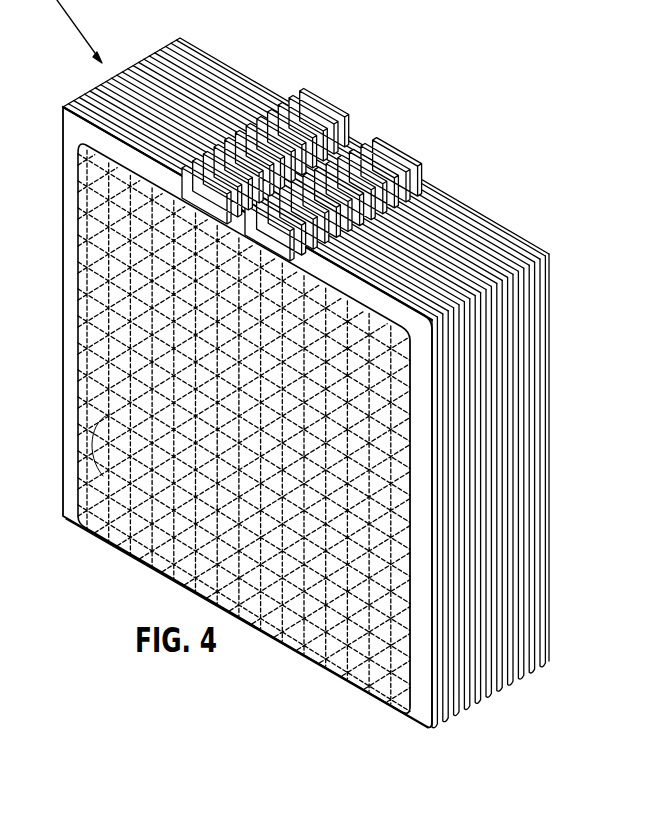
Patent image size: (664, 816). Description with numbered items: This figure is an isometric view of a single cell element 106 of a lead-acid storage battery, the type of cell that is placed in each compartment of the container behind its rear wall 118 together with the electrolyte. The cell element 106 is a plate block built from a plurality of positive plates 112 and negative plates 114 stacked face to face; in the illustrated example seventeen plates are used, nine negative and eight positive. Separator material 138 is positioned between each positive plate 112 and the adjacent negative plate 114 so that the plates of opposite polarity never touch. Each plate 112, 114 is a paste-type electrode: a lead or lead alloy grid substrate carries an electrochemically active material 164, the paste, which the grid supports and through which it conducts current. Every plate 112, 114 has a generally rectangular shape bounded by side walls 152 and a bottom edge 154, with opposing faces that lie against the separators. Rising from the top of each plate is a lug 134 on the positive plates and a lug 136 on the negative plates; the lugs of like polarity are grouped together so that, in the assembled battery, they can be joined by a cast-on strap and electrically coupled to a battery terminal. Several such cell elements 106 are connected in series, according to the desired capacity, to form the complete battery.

The cell element 106 is at (529, 152).
The positive plate 112 is at (545, 300).
The negative plate 114 is at (549, 268).
The rear wall 118 is at (7, 213).
The lug 134 is at (415, 178).
The lug 136 is at (300, 90).
The separator 138 is at (419, 405).
The side wall 152 is at (412, 563).
The bottom edge 154 is at (364, 702).
The electrochemically active material 164 is at (197, 475).